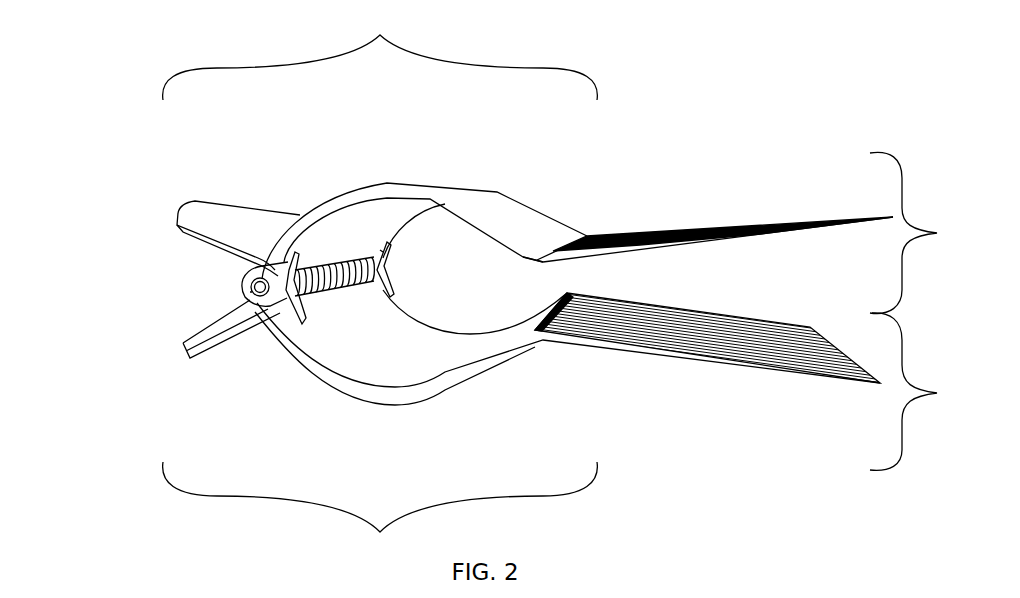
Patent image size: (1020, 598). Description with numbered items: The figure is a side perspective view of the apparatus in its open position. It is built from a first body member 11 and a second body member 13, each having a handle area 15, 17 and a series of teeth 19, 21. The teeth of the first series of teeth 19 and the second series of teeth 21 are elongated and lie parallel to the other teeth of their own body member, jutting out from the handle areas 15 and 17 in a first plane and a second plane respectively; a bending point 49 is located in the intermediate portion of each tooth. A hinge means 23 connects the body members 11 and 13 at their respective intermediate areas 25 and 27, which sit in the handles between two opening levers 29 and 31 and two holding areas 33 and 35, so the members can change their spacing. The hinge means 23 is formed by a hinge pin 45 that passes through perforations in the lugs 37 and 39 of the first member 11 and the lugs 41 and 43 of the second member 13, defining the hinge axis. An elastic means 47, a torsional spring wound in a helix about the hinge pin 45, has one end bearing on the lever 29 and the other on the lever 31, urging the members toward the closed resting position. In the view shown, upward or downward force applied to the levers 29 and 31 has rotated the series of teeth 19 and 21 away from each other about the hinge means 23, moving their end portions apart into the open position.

The first body member 11 is at (916, 232).
The second body member 13 is at (916, 391).
The handle area 15 is at (380, 55).
The handle area 17 is at (380, 509).
The first series of teeth 19 is at (755, 215).
The second series of teeth 21 is at (780, 368).
The hinge means 23 is at (232, 281).
The intermediate area 25 is at (261, 270).
The intermediate area 27 is at (268, 306).
The opening lever 29 is at (228, 218).
The opening lever 31 is at (210, 340).
The holding area 33 is at (397, 184).
The holding area 35 is at (417, 406).
The lug 37 is at (248, 292).
The lug 39 is at (380, 251).
The lug 41 is at (291, 306).
The lug 43 is at (376, 294).
The hinge pin 45 is at (256, 294).
The elastic means 47 is at (327, 292).
The bending point 49 is at (545, 258).